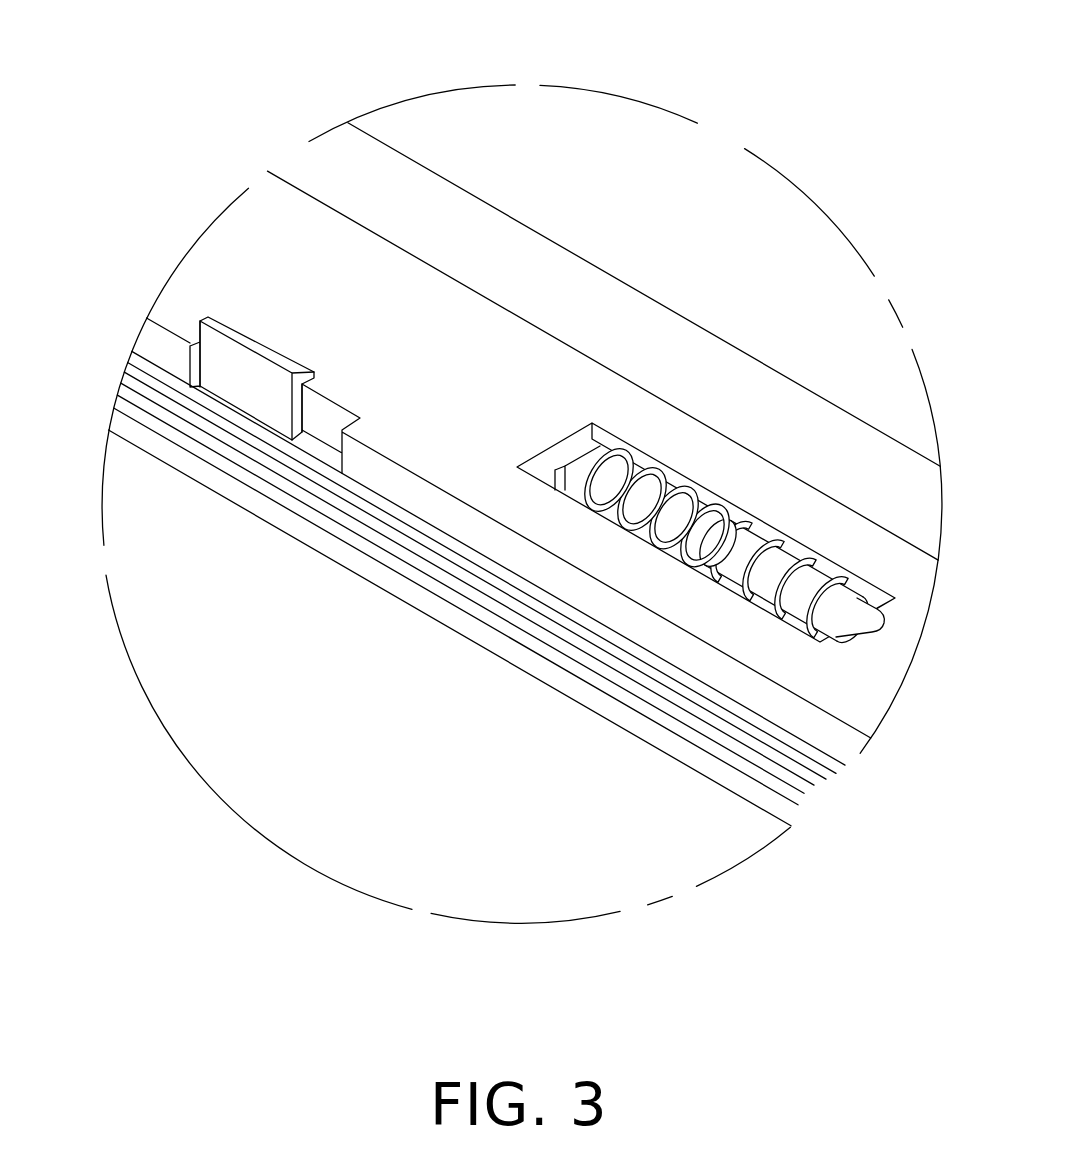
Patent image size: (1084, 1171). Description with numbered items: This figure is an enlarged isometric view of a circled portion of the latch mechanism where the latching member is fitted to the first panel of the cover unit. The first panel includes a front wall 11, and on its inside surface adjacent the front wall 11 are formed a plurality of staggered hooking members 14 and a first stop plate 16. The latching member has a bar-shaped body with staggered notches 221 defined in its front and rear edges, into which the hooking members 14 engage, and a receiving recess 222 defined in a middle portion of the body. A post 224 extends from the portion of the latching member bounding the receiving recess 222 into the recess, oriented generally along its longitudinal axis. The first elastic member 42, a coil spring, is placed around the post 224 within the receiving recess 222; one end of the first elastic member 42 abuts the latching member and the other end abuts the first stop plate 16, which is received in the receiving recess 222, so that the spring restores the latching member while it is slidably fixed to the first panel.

The front wall 11 is at (525, 555).
The hooking member 14 is at (185, 365).
The first stop plate 16 is at (487, 251).
The notch 221 is at (473, 531).
The receiving recess 222 is at (706, 331).
The post 224 is at (816, 389).
The first elastic member 42 is at (691, 324).